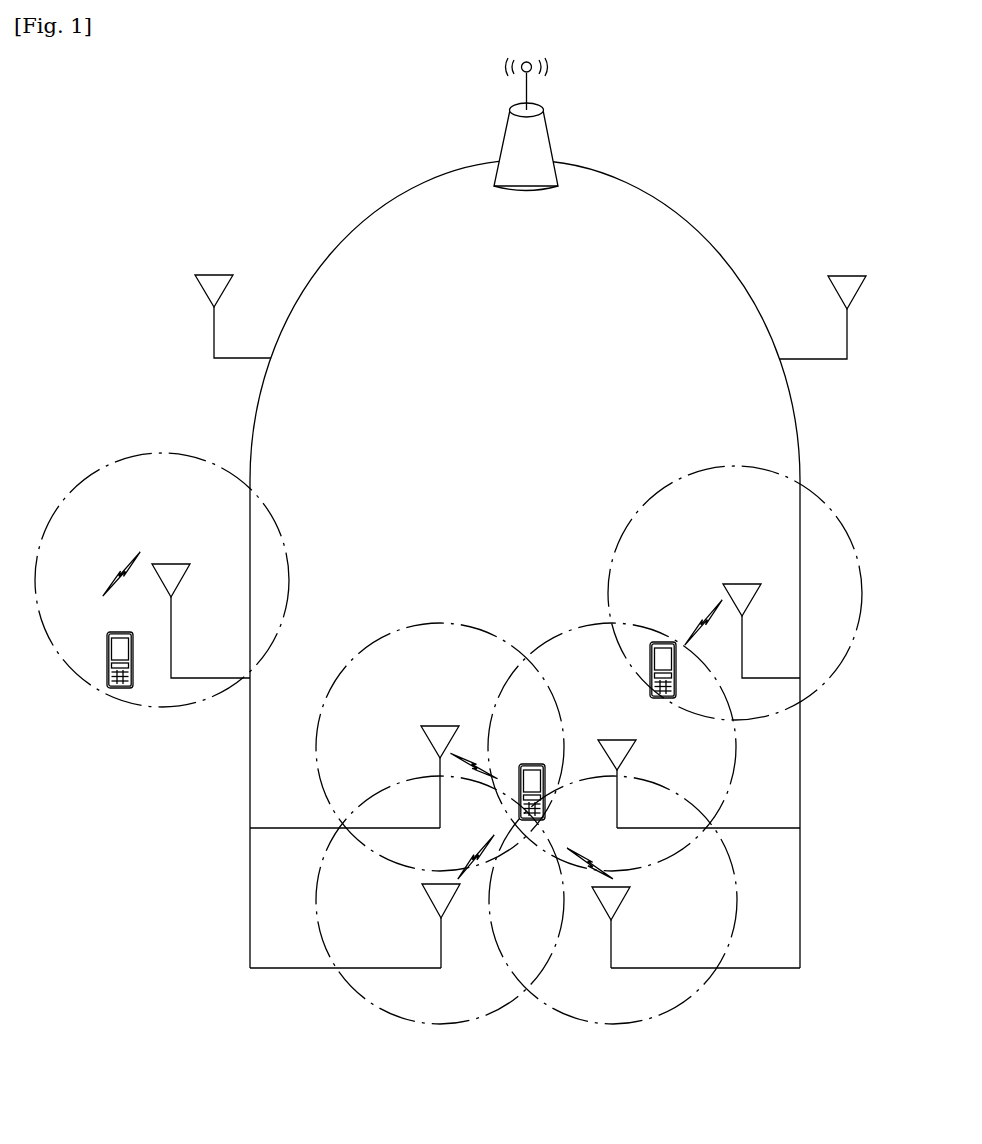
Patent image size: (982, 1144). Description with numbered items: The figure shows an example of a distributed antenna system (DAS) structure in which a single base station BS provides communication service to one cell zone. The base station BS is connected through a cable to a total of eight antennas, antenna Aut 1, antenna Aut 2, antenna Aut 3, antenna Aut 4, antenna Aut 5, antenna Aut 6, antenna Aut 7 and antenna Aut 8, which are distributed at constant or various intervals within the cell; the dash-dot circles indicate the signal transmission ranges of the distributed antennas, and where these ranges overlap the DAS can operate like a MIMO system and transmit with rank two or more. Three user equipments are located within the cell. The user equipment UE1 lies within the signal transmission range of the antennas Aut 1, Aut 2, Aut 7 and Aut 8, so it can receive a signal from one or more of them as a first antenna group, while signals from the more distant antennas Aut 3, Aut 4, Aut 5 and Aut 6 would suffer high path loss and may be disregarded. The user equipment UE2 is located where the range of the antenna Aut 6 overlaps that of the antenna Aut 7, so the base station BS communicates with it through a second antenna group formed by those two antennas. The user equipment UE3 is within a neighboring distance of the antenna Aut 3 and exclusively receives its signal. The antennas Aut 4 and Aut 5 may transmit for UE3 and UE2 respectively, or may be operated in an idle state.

The base station BS is at (526, 124).
The antenna 1 Aut 1 is at (440, 900).
The antenna 2 Aut 2 is at (440, 747).
The antenna 3 Aut 3 is at (162, 580).
The antenna 4 Aut 4 is at (207, 316).
The antenna 5 Aut 5 is at (848, 317).
The antenna 6 Aut 6 is at (735, 593).
The antenna 7 Aut 7 is at (612, 747).
The antenna 8 Aut 8 is at (613, 900).
The user equipment 1 UE1 is at (533, 809).
The user equipment 2 UE2 is at (694, 679).
The user equipment 3 UE3 is at (122, 679).